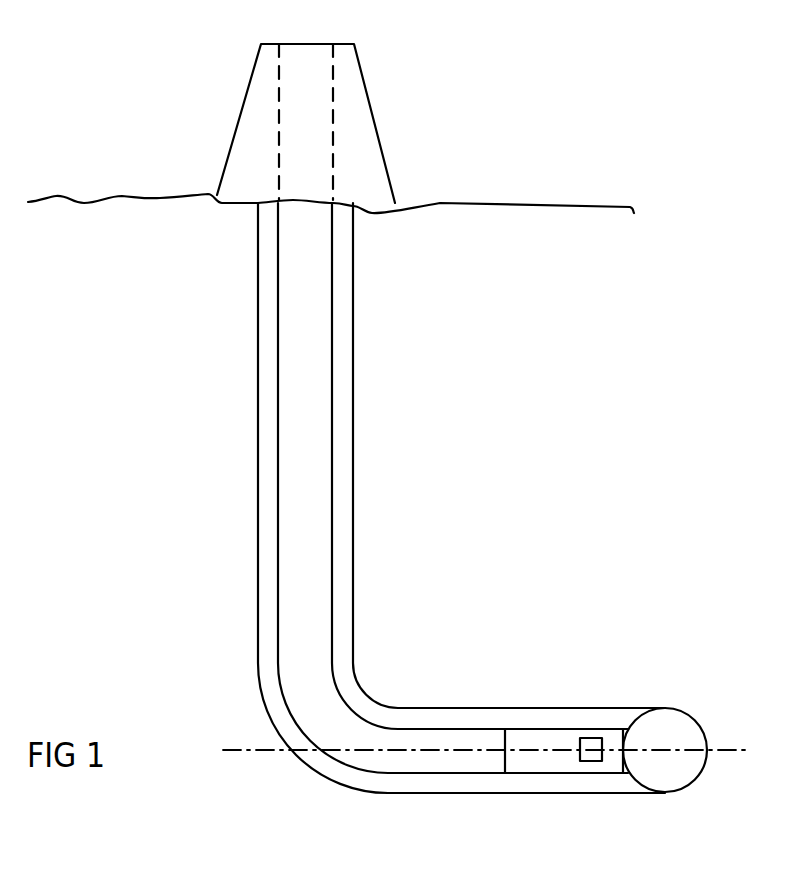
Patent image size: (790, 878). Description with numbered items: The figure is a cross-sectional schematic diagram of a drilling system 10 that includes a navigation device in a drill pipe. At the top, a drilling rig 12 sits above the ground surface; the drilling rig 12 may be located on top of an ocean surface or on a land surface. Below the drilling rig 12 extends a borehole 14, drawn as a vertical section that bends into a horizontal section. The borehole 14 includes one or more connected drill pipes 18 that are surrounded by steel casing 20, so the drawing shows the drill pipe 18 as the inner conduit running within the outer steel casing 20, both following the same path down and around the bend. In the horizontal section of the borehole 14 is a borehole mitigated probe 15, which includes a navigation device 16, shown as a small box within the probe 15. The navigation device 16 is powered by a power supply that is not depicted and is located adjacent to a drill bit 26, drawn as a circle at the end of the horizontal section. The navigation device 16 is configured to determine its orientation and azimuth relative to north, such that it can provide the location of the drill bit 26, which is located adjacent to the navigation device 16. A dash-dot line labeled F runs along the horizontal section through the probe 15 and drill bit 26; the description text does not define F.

The drilling system 10 is at (440, 74).
The drilling rig 12 is at (385, 150).
The borehole 14 is at (353, 483).
The borehole mitigated probe 15 is at (518, 729).
The navigation device 16 is at (590, 738).
The drill pipe 18 is at (332, 355).
The steel casing 20 is at (258, 420).
The drill bit 26 is at (673, 708).
The axis of lateral wellbore section F is at (258, 750).